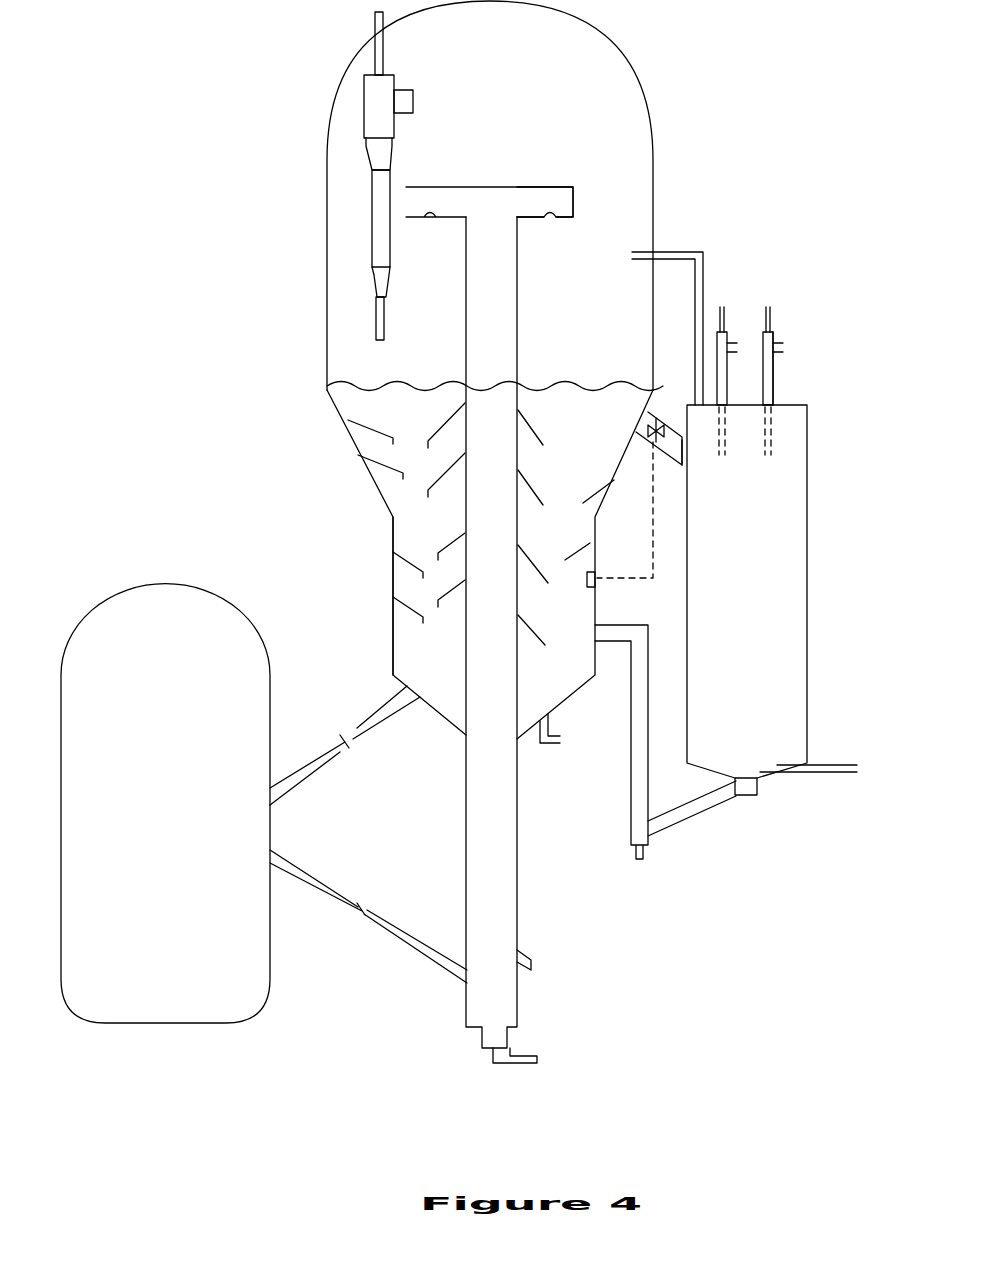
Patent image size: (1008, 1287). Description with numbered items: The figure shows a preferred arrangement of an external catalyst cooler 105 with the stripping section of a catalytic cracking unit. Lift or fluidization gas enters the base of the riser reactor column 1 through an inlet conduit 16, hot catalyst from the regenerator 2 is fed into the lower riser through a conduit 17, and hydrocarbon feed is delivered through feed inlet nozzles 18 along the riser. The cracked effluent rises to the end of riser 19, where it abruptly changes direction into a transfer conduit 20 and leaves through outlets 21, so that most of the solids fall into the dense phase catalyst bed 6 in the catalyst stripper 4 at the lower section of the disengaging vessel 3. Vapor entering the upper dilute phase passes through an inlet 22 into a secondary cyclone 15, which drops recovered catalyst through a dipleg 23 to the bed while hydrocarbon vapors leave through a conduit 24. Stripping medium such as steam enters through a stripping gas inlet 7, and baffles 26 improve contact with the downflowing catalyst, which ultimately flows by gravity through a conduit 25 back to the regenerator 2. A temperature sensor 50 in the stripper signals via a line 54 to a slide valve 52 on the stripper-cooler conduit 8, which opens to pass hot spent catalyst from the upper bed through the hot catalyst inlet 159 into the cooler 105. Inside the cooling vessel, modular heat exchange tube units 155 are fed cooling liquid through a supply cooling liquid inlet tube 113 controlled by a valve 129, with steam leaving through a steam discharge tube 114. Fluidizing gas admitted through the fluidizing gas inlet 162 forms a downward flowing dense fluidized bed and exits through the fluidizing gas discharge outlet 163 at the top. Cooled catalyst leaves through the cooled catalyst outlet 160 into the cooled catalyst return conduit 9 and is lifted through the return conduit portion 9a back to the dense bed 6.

The riser reactor column 1 is at (530, 851).
The regenerator 2 is at (165, 824).
The disengaging vessel 3 is at (642, 63).
The catalyst stripper 4 is at (352, 489).
The dense phase catalyst bed 6 is at (413, 516).
The stripping gas inlet 7 is at (563, 743).
The stripper-cooler conduit 8 is at (675, 432).
The cooled catalyst return conduit 9 is at (705, 815).
The cooled catalyst return conduit portion 9a is at (625, 760).
The secondary cyclone 15 is at (365, 178).
The inlet conduit 16 is at (542, 1058).
The conduit 17 is at (402, 950).
The feed inlet nozzle 18 is at (535, 965).
The end of riser 19 is at (494, 187).
The transfer conduit 20 is at (528, 187).
The outlet 21 is at (549, 217).
The cyclone inlet 22 is at (413, 104).
The dipleg 23 is at (390, 315).
The conduit 24 is at (383, 33).
The conduit 25 is at (373, 733).
The baffles 26 is at (349, 419).
The temperature sensor 50 is at (597, 580).
The slide valve 52 is at (647, 434).
The line 54 is at (648, 525).
The external cooler 105 is at (788, 553).
The supply cooling liquid inlet tube 113 is at (770, 307).
The steam discharge tube 114 is at (787, 347).
The valve 129 is at (767, 320).
The modular heat exchange tube unit 155 is at (791, 393).
The hot catalyst inlet 159 is at (680, 467).
The cooled catalyst outlet 160 is at (762, 783).
The fluidizing gas inlet 162 is at (866, 768).
The fluidizing gas discharge outlet 163 is at (678, 250).